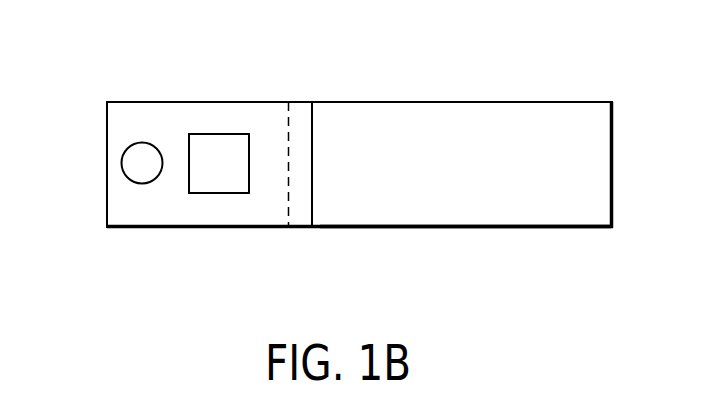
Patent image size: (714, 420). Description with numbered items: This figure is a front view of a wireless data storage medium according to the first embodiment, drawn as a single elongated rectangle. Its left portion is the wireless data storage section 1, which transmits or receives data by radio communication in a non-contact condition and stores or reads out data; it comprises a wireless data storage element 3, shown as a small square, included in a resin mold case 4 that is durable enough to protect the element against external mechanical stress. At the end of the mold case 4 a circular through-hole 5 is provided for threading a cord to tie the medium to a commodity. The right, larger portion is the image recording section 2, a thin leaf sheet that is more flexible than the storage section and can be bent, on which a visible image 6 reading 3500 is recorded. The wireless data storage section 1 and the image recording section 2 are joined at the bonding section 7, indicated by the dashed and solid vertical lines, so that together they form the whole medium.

The wireless data storage section 1 is at (163, 238).
The image recording section 2 is at (445, 103).
The wireless data storage element 3 is at (230, 145).
The mold case 4 is at (154, 111).
The through-hole 5 is at (128, 163).
The visible image 6 is at (443, 230).
The bonding section 7 is at (302, 110).
The visible image content 3500 is at (448, 227).